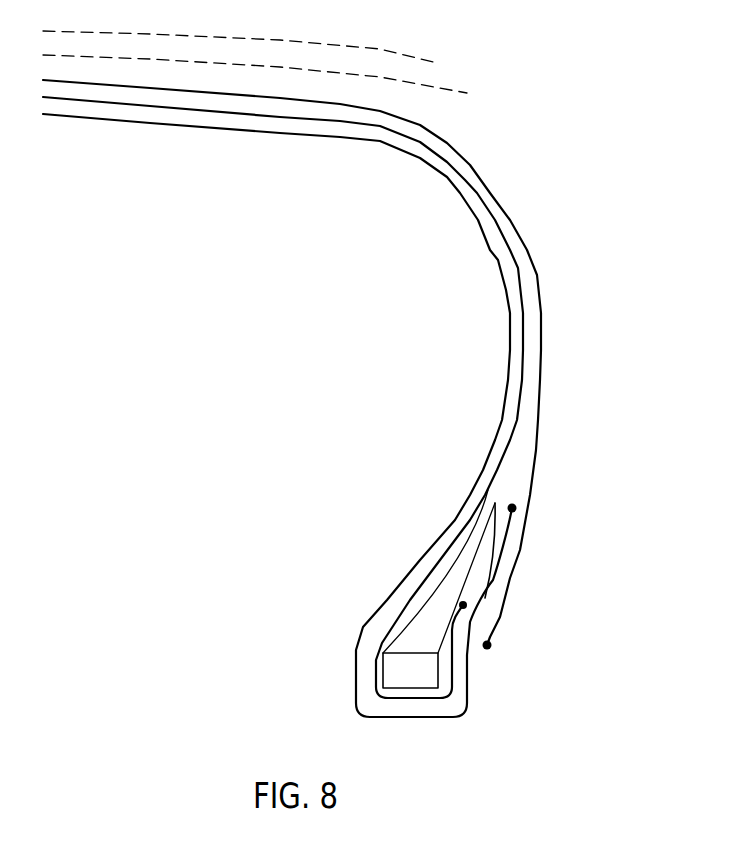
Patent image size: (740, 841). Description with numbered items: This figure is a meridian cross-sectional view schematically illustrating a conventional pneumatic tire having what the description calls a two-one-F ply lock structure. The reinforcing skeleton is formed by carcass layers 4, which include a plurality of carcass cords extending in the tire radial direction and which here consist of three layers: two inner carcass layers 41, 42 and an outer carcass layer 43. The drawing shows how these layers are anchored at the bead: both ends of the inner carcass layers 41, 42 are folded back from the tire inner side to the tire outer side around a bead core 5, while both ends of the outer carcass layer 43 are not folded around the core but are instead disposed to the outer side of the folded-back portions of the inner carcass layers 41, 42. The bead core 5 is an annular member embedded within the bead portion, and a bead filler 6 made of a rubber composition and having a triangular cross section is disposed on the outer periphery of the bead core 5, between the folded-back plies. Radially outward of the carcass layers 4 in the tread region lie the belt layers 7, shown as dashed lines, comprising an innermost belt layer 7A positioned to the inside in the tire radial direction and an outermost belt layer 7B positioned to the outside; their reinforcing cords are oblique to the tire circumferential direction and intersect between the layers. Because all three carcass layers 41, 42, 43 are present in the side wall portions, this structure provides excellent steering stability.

The carcass layers 4 is at (351, 398).
The inner carcass layer 41 is at (625, 337).
The inner carcass layer 42 is at (522, 292).
The outer carcass layer 43 is at (542, 343).
The bead core 5 is at (428, 678).
The bead filler 6 is at (462, 563).
The belt layers 7 is at (255, 139).
The innermost belt layer 7A is at (120, 60).
The outermost belt layer 7B is at (203, 35).